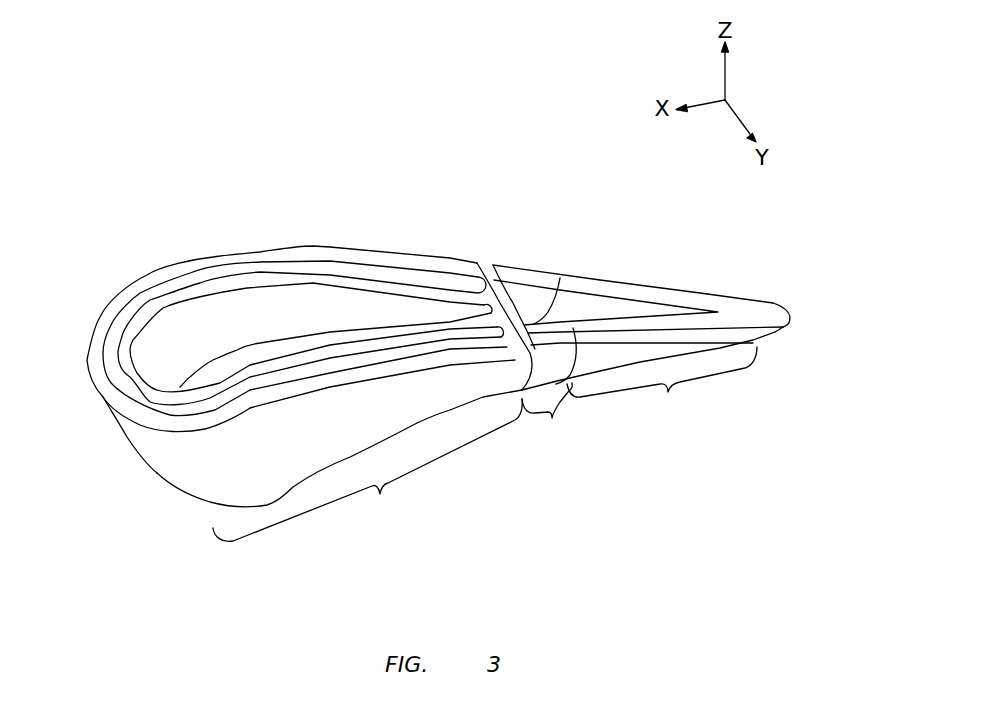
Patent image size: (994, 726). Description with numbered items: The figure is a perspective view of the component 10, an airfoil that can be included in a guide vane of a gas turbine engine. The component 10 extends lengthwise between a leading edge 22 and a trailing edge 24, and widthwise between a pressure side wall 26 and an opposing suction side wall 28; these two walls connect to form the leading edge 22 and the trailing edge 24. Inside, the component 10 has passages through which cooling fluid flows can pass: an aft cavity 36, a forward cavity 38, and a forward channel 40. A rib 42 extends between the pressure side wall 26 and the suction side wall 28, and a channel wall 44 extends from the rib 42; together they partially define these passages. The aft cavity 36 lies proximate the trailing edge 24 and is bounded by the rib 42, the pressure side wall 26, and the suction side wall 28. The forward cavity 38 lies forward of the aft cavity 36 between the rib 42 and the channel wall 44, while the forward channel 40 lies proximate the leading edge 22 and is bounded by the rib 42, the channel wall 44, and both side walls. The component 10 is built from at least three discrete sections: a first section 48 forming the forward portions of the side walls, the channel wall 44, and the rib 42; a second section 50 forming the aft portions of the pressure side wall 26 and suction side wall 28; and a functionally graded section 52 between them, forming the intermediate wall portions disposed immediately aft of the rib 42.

The component 10 is at (164, 158).
The leading edge 22 is at (123, 430).
The trailing edge 24 is at (790, 314).
The pressure side wall 26 is at (218, 459).
The suction side wall 28 is at (318, 247).
The aft cavity 36 is at (531, 323).
The forward cavity 38 is at (270, 348).
The forward channel 40 is at (152, 300).
The rib 42 is at (477, 263).
The channel wall 44 is at (198, 297).
The first section 48 is at (367, 470).
The second section 50 is at (662, 385).
The functionally graded section 52 is at (547, 413).